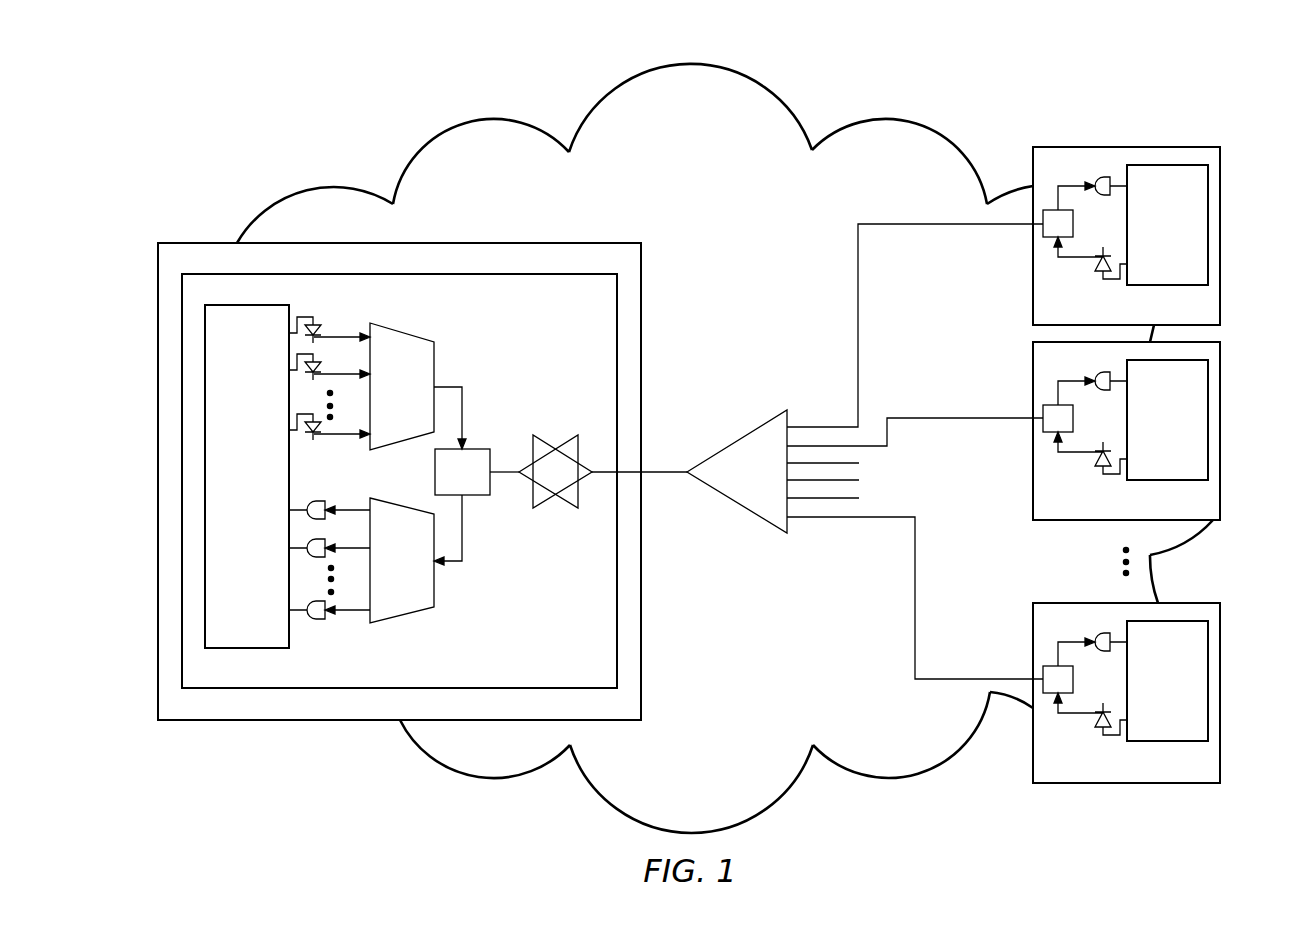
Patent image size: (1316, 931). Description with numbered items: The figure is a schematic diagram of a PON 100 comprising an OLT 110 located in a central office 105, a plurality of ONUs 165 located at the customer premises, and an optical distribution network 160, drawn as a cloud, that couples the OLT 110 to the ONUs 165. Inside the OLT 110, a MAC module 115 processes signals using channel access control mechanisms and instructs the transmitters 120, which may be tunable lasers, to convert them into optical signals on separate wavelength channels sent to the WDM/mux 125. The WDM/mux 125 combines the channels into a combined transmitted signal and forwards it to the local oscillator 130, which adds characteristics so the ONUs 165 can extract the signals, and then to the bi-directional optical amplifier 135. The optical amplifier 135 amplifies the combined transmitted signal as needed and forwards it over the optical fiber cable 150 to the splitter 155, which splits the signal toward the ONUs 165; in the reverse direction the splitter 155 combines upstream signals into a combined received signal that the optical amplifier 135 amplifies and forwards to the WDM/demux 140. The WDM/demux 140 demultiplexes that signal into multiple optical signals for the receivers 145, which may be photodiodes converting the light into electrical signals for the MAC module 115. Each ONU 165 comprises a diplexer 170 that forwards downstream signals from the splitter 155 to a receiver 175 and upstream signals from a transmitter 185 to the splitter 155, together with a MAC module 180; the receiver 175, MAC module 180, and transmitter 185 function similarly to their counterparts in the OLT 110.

The PON 100 is at (181, 96).
The central office 105 is at (158, 290).
The OLT 110 is at (182, 352).
The MAC module 115 is at (247, 476).
The transmitters 120 is at (312, 316).
The WDM/mux 125 is at (434, 360).
The local oscillator 130 is at (480, 498).
The bi-directional optical amplifier 135 is at (553, 447).
The WDM/demux 140 is at (434, 582).
The receivers 145 is at (319, 620).
The optical fiber cable 150 is at (665, 470).
The splitter 155 is at (737, 506).
The optical distribution network 160 is at (452, 126).
The ONUs 165 is at (1220, 238).
The diplexers 170 is at (1014, 742).
The receivers 175 is at (1103, 633).
The MAC modules 180 is at (1172, 165).
The transmitters 185 is at (1075, 757).